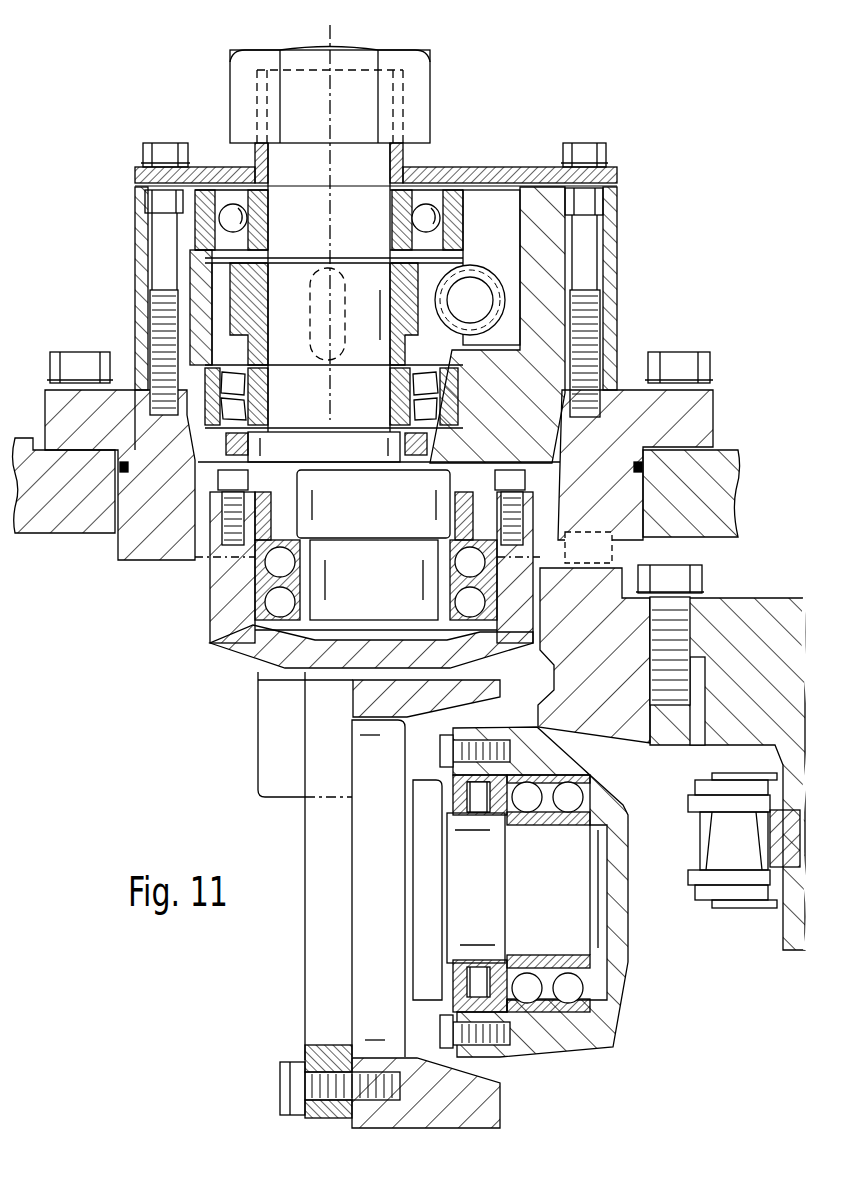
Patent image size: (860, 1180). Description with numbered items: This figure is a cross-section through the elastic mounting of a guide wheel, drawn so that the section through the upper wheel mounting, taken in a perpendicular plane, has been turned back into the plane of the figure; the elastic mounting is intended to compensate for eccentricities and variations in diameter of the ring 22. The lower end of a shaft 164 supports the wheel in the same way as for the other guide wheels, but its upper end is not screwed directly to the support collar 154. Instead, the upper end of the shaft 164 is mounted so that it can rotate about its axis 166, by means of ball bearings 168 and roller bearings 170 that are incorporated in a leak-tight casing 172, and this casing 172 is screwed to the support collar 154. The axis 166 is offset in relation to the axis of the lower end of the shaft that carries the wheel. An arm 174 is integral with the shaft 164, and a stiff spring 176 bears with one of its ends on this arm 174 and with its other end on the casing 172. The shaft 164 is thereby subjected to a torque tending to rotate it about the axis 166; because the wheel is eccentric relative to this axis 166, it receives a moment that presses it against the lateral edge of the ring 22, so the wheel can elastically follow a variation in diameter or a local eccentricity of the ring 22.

The axis 166 is at (335, 33).
The shaft 164 is at (317, 237).
The ball bearings 168 is at (392, 197).
The arm 174 is at (466, 256).
The stiff spring 176 is at (473, 279).
The leak-tight casing 172 is at (606, 240).
The roller bearings 170 is at (395, 402).
The support collar 154 is at (712, 410).
The ring 22 is at (637, 723).